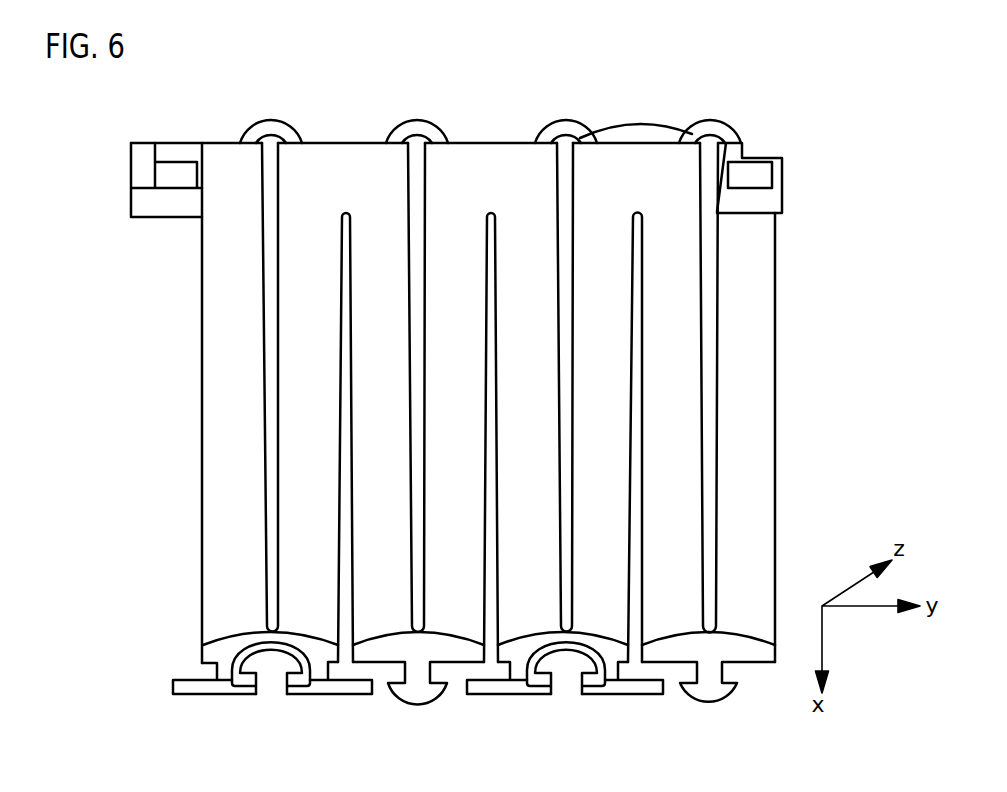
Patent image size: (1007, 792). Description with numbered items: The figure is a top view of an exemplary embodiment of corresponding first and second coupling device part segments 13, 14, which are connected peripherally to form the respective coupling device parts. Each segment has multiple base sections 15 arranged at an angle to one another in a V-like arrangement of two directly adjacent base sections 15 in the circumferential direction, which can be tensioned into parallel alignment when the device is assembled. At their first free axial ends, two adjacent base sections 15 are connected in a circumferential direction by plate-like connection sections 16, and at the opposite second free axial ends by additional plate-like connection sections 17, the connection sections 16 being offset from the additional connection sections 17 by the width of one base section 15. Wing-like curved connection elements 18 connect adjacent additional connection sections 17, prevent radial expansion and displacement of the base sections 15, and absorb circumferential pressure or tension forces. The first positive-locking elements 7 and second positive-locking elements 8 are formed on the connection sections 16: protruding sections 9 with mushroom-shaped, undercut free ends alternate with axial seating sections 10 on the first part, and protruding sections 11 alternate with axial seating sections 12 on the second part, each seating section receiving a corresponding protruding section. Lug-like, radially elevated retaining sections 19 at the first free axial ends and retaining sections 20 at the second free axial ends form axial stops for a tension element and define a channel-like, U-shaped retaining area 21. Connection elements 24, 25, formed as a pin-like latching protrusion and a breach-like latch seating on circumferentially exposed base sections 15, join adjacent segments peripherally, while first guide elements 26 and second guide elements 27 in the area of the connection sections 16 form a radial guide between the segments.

The first positive-locking element 7 is at (690, 708).
The second positive-locking element 8 is at (678, 682).
The protruding section 9 is at (420, 710).
The axial seating section 10 is at (272, 692).
The protruding section 11 is at (418, 683).
The axial seating section 12 is at (418, 668).
The first coupling device part segment 13 is at (172, 358).
The second coupling device part segment 14 is at (422, 403).
The base section 15 is at (748, 282).
The connection section 16 is at (213, 655).
The additional connection section 17 is at (347, 143).
The connection element 18 is at (557, 122).
The first retaining section 19 is at (737, 637).
The retaining section 20 is at (632, 133).
The retaining area 21 is at (670, 388).
The connection element 24 is at (750, 178).
The connection element 25 is at (175, 175).
The first guide element 26 is at (400, 710).
The second guide element 27 is at (419, 678).